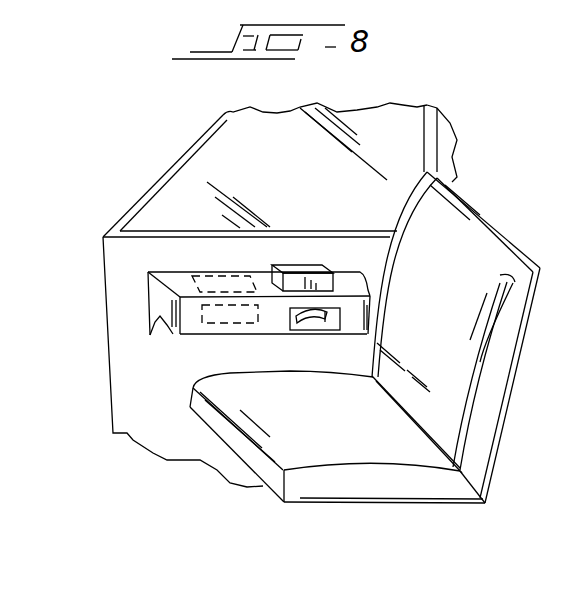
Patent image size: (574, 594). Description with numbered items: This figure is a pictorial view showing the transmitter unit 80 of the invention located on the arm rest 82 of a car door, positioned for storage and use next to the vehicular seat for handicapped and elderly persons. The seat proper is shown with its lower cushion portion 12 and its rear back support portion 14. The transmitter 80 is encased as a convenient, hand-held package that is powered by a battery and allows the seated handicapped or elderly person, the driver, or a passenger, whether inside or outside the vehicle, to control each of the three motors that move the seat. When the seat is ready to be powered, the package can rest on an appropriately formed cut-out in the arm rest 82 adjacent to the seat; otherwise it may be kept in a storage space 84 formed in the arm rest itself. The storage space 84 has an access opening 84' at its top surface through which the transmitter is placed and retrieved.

The lower cushion portion 12 is at (336, 418).
The rear back support portion 14 is at (440, 298).
The transmitter unit 80 is at (305, 268).
The arm rest 82 is at (157, 301).
The storage space 84 is at (155, 343).
The access opening 84' is at (237, 236).